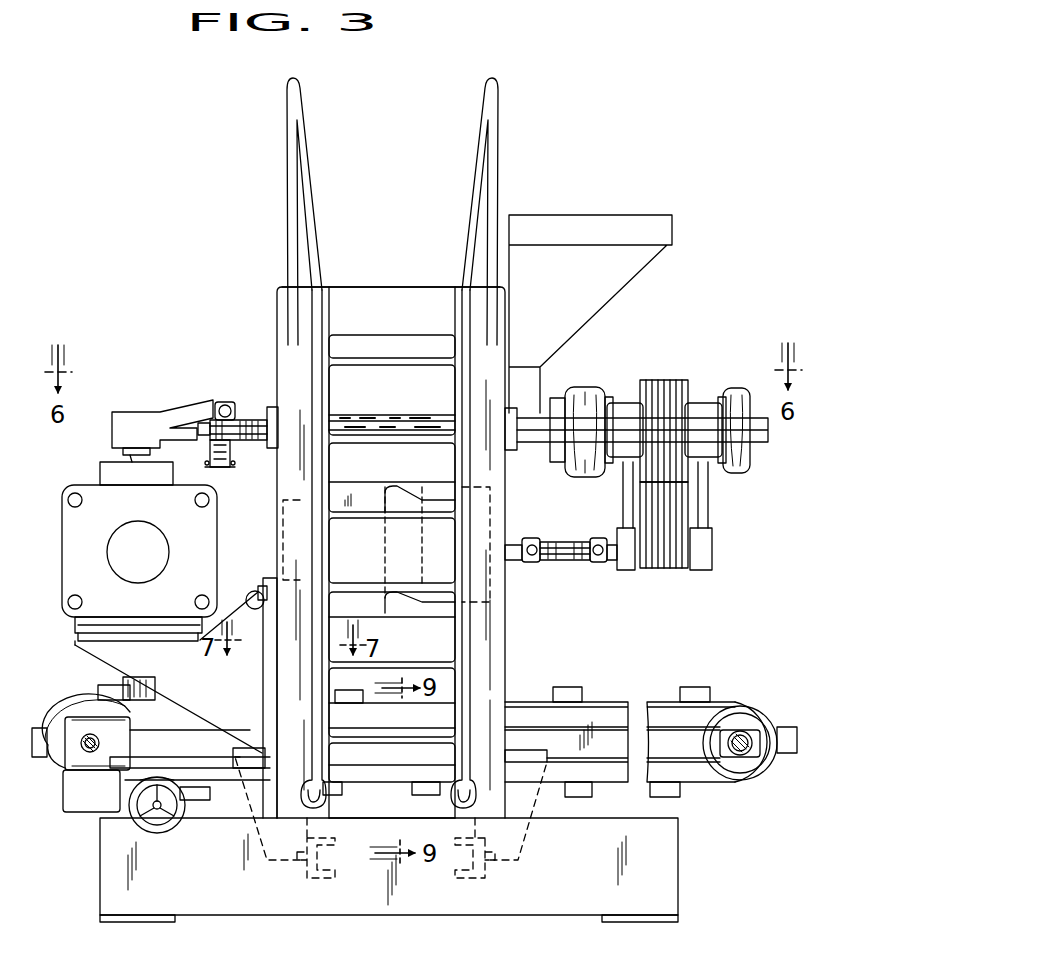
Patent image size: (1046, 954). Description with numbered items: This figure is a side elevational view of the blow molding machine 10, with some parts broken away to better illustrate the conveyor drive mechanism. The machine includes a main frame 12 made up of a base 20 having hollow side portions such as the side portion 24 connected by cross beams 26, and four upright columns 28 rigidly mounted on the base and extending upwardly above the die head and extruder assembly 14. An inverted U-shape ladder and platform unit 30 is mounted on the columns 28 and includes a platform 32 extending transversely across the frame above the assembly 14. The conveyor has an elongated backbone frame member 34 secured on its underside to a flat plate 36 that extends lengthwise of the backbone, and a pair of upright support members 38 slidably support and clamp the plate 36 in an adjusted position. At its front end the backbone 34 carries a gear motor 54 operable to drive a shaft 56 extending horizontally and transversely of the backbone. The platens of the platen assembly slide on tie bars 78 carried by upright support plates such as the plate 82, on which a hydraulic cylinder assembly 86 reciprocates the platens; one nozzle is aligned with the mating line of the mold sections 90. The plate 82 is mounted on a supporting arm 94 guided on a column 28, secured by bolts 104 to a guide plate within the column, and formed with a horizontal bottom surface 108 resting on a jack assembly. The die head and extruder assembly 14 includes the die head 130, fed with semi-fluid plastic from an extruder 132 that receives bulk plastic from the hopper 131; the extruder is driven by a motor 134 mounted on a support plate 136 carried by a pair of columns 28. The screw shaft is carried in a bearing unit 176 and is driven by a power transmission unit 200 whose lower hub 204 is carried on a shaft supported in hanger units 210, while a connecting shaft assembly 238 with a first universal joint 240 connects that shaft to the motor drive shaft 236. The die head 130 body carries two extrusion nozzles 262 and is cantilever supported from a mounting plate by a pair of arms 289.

The blow molding machine 10 is at (524, 670).
The main frame 12 is at (508, 613).
The die head and extruder assembly 14 is at (250, 397).
The base 20 is at (682, 885).
The hollow side portion 24 is at (664, 866).
The cross beams 26 is at (318, 878).
The upright columns 28 is at (278, 487).
The ladder and platform unit 30 is at (493, 203).
The platform 32 is at (381, 287).
The backbone frame member 34 is at (580, 728).
The flat plate 36 is at (570, 760).
The upright support members 38 is at (256, 797).
The gear motor 54 is at (61, 806).
The shaft 56 is at (83, 750).
The tie bars 78 is at (80, 504).
The upright support plate 82 is at (200, 548).
The hydraulic cylinder assembly 86 is at (152, 567).
The mold sections 90 is at (100, 471).
The supporting arm 94 is at (248, 615).
The bolts 104 is at (258, 608).
The horizontal bottom surface 108 is at (115, 686).
The die head 130 is at (141, 437).
The hopper 131 is at (657, 233).
The extruder 132 is at (372, 416).
The motor 134 is at (495, 503).
The support plate 136 is at (370, 484).
The bearing unit 176 is at (584, 387).
The power transmission unit 200 is at (667, 380).
The hub 204 is at (677, 570).
The hanger units 210 is at (623, 403).
The motor drive shaft 236 is at (510, 545).
The connecting shaft assembly 238 is at (566, 563).
The first universal joint 240 is at (271, 449).
The extrusion nozzles 262 is at (139, 469).
The arms 289 is at (186, 421).